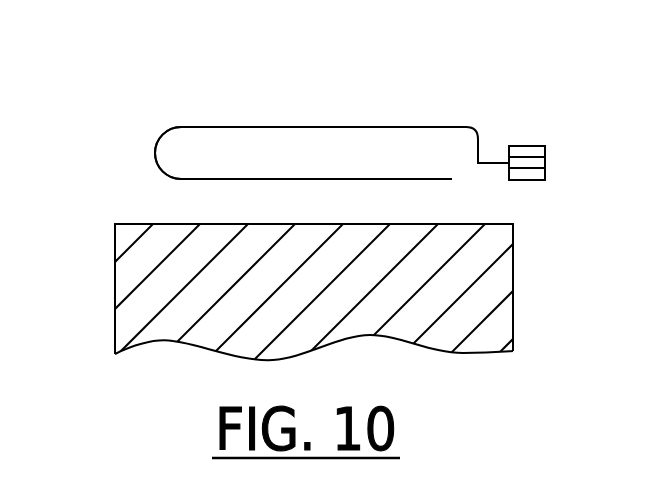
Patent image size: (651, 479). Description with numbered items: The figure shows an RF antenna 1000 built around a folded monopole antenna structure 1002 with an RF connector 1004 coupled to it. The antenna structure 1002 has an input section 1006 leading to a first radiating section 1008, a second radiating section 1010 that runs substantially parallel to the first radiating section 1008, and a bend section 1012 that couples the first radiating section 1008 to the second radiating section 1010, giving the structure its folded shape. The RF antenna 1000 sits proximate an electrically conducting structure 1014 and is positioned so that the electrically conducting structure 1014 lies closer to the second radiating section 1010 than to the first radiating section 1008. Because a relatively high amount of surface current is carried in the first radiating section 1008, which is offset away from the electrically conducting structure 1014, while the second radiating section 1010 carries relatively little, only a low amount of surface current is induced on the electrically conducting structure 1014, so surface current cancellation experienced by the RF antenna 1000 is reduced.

The RF antenna 1000 is at (343, 42).
The folded monopole antenna structure 1002 is at (187, 96).
The RF connector 1004 is at (532, 146).
The input section 1006 is at (478, 163).
The first radiating section 1008 is at (280, 127).
The second radiating section 1010 is at (228, 180).
The bend section 1012 is at (158, 164).
The electrically conducting structure 1014 is at (115, 317).